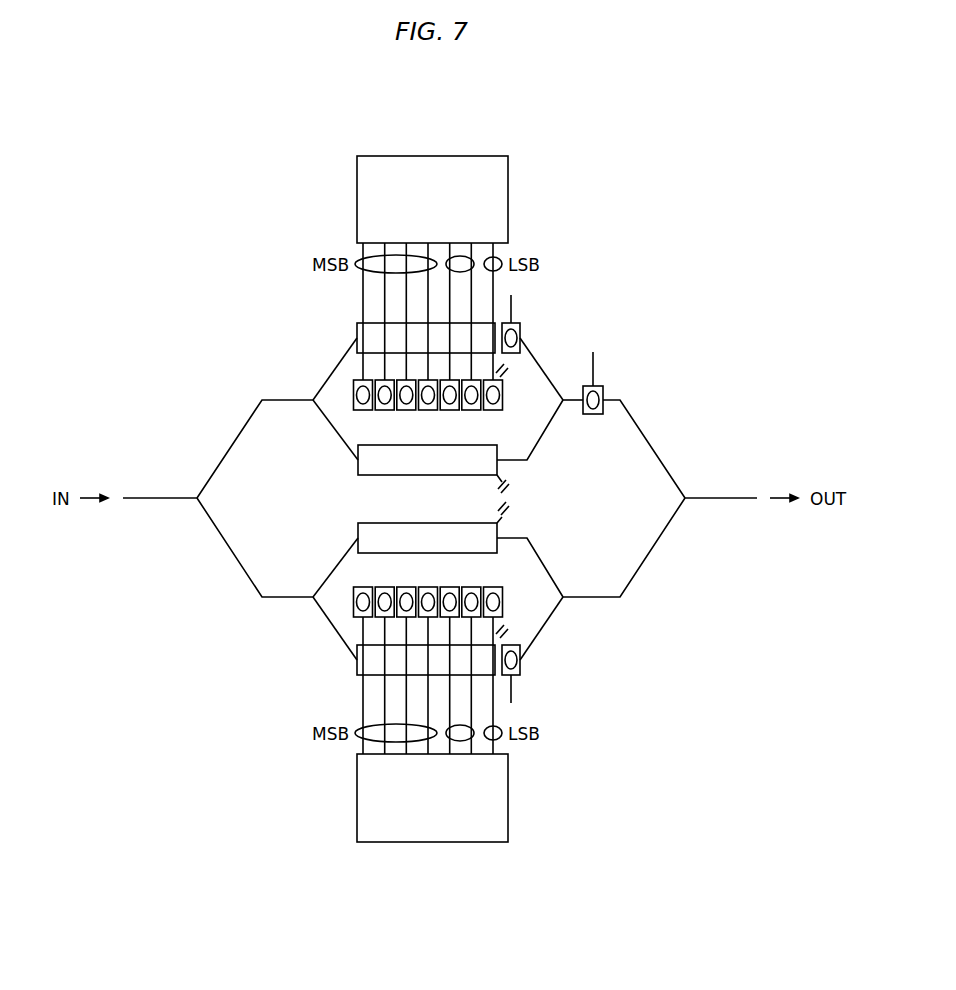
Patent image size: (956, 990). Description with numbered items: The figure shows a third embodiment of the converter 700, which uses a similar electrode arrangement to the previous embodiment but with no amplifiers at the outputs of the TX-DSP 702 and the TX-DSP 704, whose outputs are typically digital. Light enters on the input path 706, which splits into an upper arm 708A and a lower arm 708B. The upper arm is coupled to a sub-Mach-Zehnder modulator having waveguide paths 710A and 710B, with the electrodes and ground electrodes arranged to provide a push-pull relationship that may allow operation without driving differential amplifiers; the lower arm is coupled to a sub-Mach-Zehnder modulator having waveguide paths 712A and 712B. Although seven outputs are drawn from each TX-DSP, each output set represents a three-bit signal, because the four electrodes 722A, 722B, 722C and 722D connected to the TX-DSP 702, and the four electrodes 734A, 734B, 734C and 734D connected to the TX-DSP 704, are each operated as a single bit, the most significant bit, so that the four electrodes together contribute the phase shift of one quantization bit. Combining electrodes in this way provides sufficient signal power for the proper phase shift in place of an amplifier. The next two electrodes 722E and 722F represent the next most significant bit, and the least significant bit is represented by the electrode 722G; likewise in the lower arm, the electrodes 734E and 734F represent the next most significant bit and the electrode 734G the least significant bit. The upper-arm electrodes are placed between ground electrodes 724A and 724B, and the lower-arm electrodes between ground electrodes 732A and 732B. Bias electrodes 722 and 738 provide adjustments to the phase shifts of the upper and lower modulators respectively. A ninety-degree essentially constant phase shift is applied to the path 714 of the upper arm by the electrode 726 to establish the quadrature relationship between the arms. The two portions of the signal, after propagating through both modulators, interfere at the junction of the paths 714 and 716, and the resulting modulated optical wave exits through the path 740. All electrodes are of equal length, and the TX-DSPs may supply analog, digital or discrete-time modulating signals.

The converter 700 is at (259, 121).
The TX-DSP 702 is at (508, 218).
The TX-DSP 704 is at (508, 816).
The input path 706 is at (155, 499).
The upper arm 708A is at (241, 434).
The lower arm 708B is at (242, 562).
The waveguide path 710A is at (328, 378).
The waveguide path 710B is at (356, 461).
The waveguide path 712A is at (338, 563).
The waveguide path 712B is at (356, 655).
The path 714 is at (645, 438).
The path 716 is at (645, 560).
The bias electrode 722 is at (522, 322).
The electrode 722A is at (353, 402).
The electrode 722B is at (380, 411).
The electrode 722C is at (400, 411).
The electrode 722D is at (428, 411).
The electrode 722E is at (455, 411).
The electrode 722F is at (472, 411).
The electrode 722G is at (502, 403).
The ground electrode 724A is at (357, 330).
The ground electrode 724B is at (425, 476).
The electrode 726 is at (605, 388).
The ground electrode 732A is at (422, 523).
The ground electrode 732B is at (357, 674).
The electrode 734A is at (355, 600).
The electrode 734B is at (380, 617).
The electrode 734C is at (400, 618).
The electrode 734D is at (426, 587).
The electrode 734E is at (457, 586).
The electrode 734F is at (487, 586).
The electrode 734G is at (502, 595).
The bias electrode 738 is at (521, 668).
The path 740 is at (720, 499).